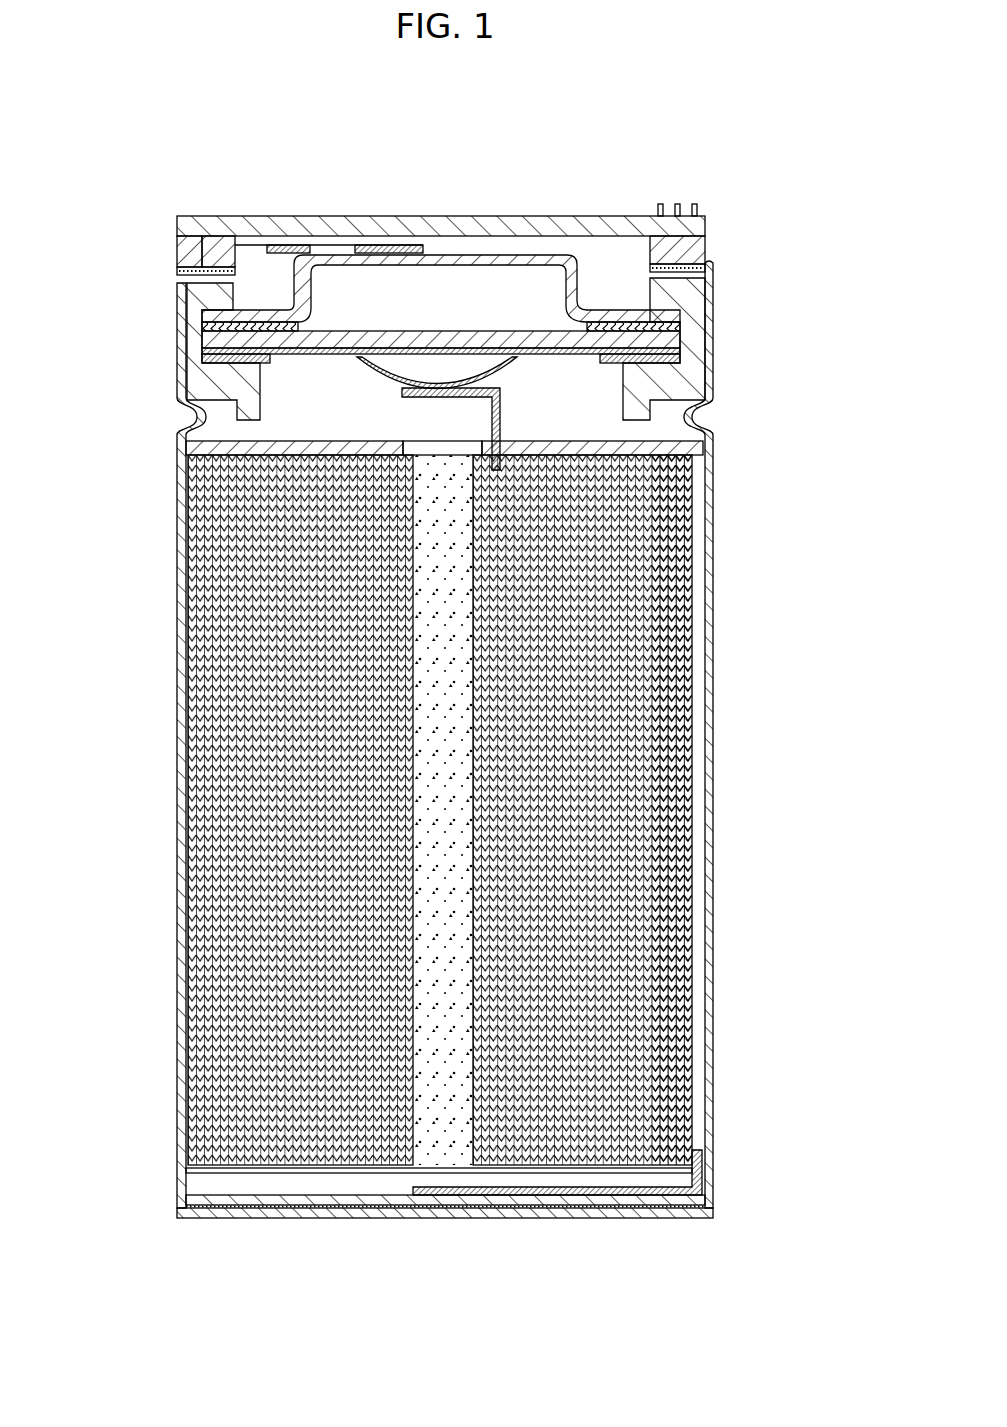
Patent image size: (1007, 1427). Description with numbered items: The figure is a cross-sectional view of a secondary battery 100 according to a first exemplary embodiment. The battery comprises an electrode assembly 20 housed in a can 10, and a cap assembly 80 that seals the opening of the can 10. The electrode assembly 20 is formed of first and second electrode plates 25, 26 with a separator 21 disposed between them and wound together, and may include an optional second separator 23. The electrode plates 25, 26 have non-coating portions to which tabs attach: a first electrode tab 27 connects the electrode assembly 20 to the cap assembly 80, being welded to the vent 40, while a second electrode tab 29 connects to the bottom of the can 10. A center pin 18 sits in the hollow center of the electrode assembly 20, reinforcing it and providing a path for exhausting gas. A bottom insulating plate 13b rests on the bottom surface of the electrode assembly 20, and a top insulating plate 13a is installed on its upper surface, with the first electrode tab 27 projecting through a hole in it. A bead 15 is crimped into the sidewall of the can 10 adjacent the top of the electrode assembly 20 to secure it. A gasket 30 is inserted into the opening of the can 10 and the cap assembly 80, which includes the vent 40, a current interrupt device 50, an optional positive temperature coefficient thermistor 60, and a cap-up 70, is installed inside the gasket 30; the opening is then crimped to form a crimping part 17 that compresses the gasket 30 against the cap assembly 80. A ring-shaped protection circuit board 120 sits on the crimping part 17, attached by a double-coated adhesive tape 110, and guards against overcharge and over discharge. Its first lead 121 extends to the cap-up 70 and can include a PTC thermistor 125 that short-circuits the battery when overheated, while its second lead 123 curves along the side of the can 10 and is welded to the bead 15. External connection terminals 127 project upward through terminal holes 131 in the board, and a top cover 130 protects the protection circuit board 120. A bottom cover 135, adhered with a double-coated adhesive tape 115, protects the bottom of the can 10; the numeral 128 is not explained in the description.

The secondary battery 100 is at (210, 96).
The can 10 is at (180, 548).
The top insulating plate 13a is at (203, 425).
The bottom insulating plate 13b is at (321, 1172).
The bead 15 is at (200, 406).
The crimping part 17 is at (206, 285).
The center pin 18 is at (422, 620).
The electrode assembly 20 is at (780, 425).
The separator 21 is at (678, 566).
The second separator 23 is at (660, 634).
The first electrode plate 25 is at (690, 600).
The second electrode plate 26 is at (690, 520).
The first electrode tab 27 is at (500, 433).
The second electrode tab 29 is at (625, 1197).
The gasket 30 is at (714, 300).
The vent 40 is at (301, 312).
The current interrupt device 50 is at (495, 340).
The positive temperature coefficient thermistor 60 is at (605, 321).
The cap-up 70 is at (412, 252).
The cap assembly 80 is at (312, 130).
The double-coated adhesive tape 110 is at (712, 267).
The double-coated adhesive tape 115 is at (537, 1210).
The protection circuit board 120 is at (708, 240).
The first lead 121 is at (248, 247).
The second lead 123 is at (714, 353).
The PTC thermistor 125 is at (276, 246).
The external connection terminals 127 is at (699, 208).
The connection plate 128 is at (370, 247).
The top cover 130 is at (646, 237).
The terminal holes 131 is at (689, 204).
The bottom cover 135 is at (583, 1210).